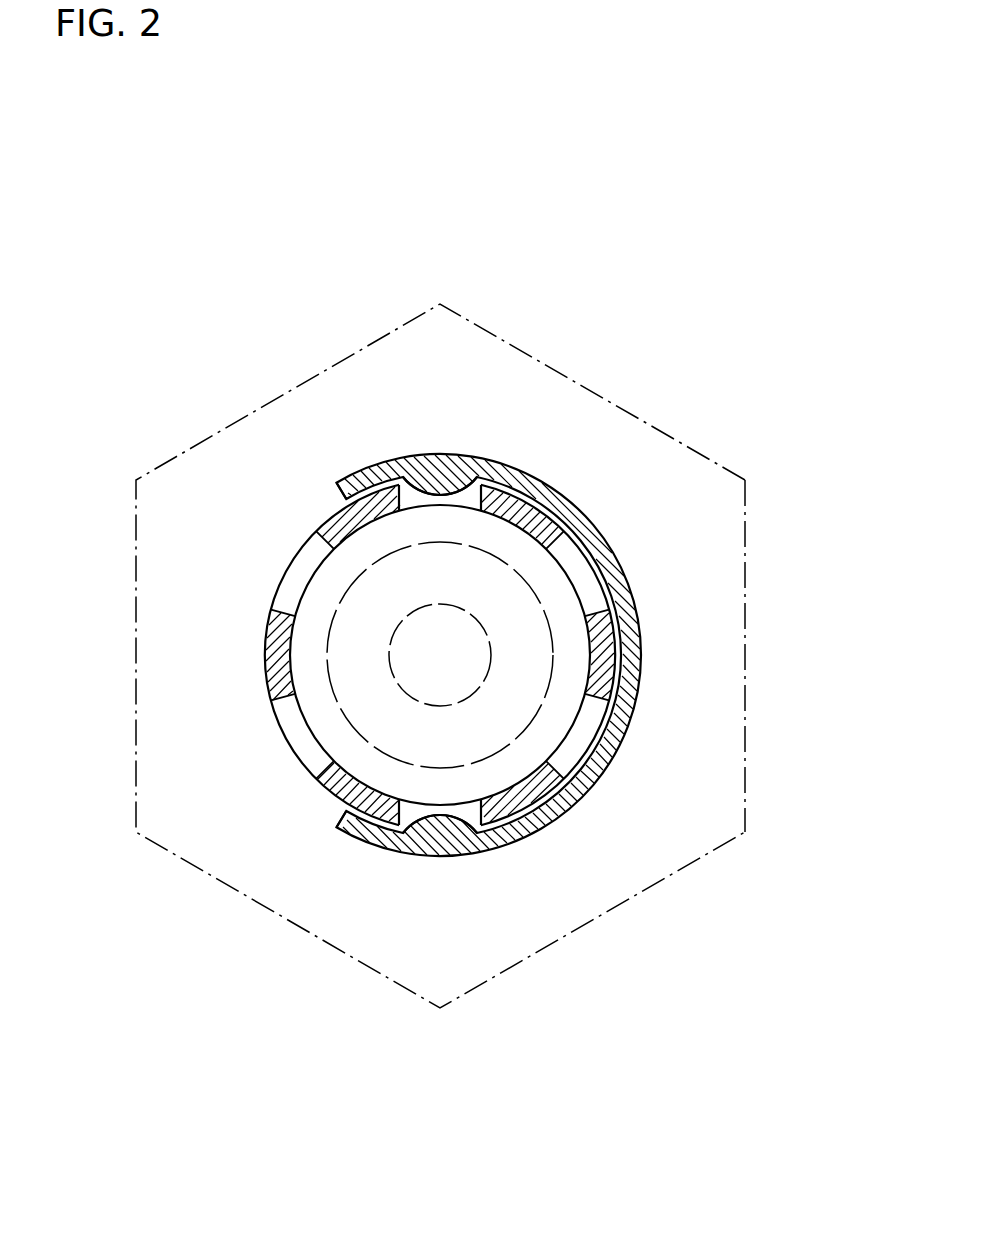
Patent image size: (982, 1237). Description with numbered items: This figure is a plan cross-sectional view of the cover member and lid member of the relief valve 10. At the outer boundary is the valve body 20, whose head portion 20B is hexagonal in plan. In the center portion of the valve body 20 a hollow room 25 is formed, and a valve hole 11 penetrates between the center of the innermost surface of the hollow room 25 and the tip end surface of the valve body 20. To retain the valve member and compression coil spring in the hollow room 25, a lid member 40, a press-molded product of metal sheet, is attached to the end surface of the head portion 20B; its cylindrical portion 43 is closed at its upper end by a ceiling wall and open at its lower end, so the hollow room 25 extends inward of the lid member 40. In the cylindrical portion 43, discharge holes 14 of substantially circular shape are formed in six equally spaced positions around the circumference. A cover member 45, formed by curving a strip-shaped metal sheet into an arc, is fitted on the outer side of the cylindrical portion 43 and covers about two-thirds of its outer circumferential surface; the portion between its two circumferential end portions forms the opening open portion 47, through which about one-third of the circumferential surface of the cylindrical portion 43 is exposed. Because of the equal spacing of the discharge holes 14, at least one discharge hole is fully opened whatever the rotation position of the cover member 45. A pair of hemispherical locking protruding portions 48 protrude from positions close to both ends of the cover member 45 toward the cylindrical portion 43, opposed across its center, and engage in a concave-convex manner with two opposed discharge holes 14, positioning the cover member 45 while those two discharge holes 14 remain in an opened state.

The relief valve 10 is at (665, 380).
The valve hole 11 is at (469, 693).
The discharge holes 14 is at (282, 705).
The valve body 20 is at (705, 458).
The head portion 20B is at (748, 512).
The hollow room 25 is at (520, 630).
The lid member 40 is at (323, 800).
The cylindrical portion 43 is at (325, 797).
The cover member 45 is at (600, 780).
The opening open portion 47 is at (343, 492).
The locking protruding portions 48 is at (468, 458).